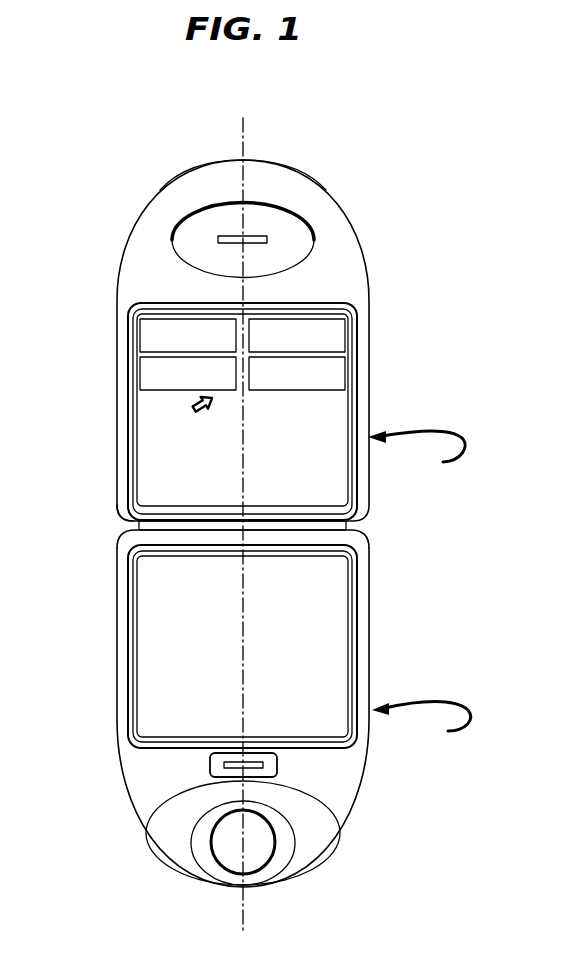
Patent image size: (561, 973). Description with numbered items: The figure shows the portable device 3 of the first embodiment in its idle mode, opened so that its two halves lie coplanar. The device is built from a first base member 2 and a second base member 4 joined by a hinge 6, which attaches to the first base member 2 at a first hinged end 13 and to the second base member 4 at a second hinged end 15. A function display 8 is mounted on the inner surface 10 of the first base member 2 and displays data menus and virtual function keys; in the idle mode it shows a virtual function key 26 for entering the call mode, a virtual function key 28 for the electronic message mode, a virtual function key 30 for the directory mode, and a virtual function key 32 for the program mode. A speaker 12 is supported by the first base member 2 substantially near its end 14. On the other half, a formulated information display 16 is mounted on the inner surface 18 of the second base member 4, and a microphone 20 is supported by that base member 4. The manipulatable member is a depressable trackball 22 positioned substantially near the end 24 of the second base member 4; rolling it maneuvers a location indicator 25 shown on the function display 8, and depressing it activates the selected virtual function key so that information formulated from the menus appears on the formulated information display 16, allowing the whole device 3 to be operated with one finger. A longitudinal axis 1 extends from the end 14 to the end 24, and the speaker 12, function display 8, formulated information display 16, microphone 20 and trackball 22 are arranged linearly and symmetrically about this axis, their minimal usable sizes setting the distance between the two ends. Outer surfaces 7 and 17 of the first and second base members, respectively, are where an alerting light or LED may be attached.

The longitudinal axis 1 is at (240, 135).
The first base member 2 is at (368, 278).
The portable device 3 is at (111, 206).
The second base member 4 is at (371, 600).
The hinge 6 is at (380, 521).
The outer surface of first base member 7 is at (416, 452).
The function display 8 is at (369, 431).
The inner surface of first base member 10 is at (333, 242).
The speaker 12 is at (282, 207).
The first hinged end 13 is at (120, 518).
The end of first base member 14 is at (253, 160).
The second hinged end 15 is at (368, 540).
The formulated information display 16 is at (361, 628).
The outer surface of second base member 17 is at (421, 723).
The inner surface of second base member 18 is at (342, 785).
The microphone 20 is at (210, 764).
The depressable trackball 22 is at (261, 863).
The end of second base member 24 is at (181, 878).
The location indicator 25 is at (189, 410).
The virtual function key 26 is at (140, 340).
The virtual function key 28 is at (345, 333).
The virtual function key 30 is at (140, 372).
The virtual function key 32 is at (345, 370).